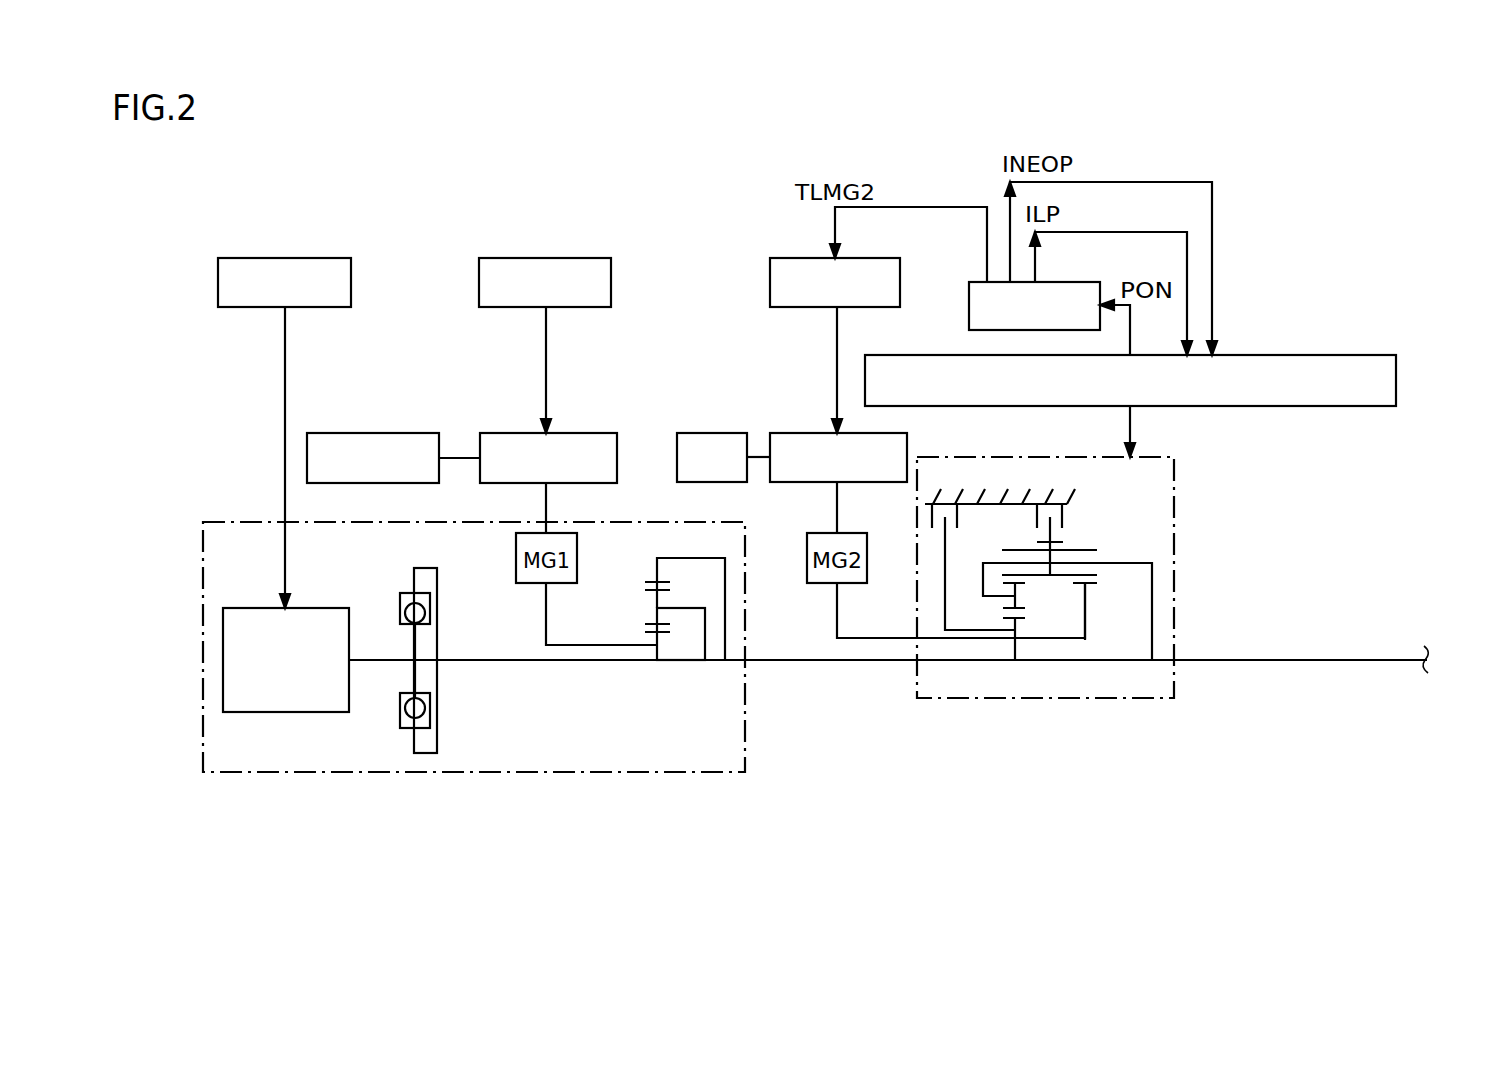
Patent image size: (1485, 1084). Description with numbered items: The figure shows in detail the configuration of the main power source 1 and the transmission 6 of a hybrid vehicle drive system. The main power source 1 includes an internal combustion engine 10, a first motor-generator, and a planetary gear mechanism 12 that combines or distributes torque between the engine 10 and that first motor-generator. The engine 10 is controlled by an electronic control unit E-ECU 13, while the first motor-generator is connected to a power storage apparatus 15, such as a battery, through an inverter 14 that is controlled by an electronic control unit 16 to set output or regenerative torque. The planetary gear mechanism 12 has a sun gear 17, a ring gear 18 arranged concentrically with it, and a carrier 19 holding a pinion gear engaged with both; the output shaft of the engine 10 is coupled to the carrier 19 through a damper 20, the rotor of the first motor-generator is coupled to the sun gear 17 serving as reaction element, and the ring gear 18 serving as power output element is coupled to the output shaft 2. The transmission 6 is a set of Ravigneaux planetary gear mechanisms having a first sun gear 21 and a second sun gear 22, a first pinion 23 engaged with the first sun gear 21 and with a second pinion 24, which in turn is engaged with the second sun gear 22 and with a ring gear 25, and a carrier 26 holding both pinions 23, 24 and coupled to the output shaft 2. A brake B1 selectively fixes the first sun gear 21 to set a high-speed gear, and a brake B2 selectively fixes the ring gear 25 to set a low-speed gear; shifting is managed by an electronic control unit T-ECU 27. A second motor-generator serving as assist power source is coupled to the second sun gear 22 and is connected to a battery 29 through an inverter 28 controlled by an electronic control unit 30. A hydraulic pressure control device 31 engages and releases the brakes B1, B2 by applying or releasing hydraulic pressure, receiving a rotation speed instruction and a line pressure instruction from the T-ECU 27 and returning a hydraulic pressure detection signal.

The main power source 1 is at (232, 522).
The output shaft 2 is at (1280, 662).
The transmission 6 is at (1072, 581).
The engine 10 is at (307, 607).
The planetary gear mechanism 12 is at (656, 606).
The engine ECU 13 is at (315, 258).
The inverter 14 is at (527, 433).
The power storage apparatus 15 is at (352, 433).
The MG1-ECU 16 is at (575, 258).
The sun gear 17 is at (663, 635).
The ring gear 18 is at (652, 578).
The carrier 19 is at (688, 608).
The damper 20 is at (430, 716).
The first sun gear 21 is at (1020, 620).
The second sun gear 22 is at (1092, 585).
The first pinion 23 is at (1022, 585).
The second pinion 24 is at (1077, 548).
The ring gear 25 is at (1060, 527).
The carrier 26 is at (1107, 560).
The T-ECU 27 is at (1062, 280).
The inverter 28 is at (803, 432).
The battery 29 is at (692, 432).
The MG2-ECU 30 is at (868, 257).
The hydraulic pressure control device 31 is at (1396, 380).
The brake B1 is at (948, 500).
The brake B2 is at (1055, 500).